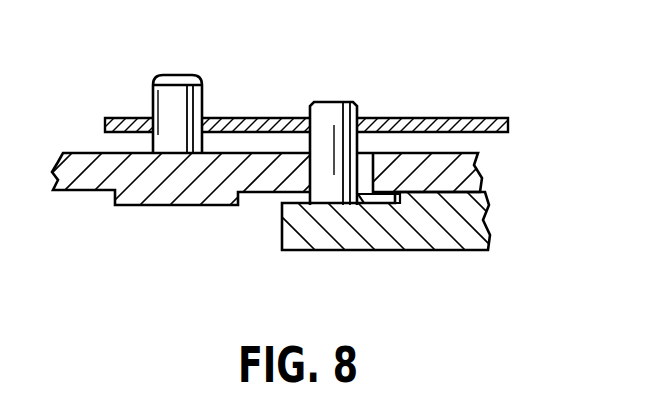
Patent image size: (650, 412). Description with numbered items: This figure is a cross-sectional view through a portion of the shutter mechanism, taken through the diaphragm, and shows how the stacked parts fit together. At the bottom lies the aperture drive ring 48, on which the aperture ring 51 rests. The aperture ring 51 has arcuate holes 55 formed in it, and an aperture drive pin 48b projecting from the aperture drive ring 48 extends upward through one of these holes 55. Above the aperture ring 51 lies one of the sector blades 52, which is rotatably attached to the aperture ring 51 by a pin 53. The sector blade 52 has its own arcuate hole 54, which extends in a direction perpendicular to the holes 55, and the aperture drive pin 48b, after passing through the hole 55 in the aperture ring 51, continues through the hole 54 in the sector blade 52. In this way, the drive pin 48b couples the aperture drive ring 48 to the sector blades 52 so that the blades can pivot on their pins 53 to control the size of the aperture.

The aperture drive ring 48 is at (367, 235).
The aperture drive pins 48b is at (318, 108).
The aperture ring 51 is at (92, 180).
The sector blades 52 is at (460, 118).
The pins 53 is at (165, 82).
The arcuate holes 54 is at (362, 118).
The arcuate holes 55 is at (360, 178).